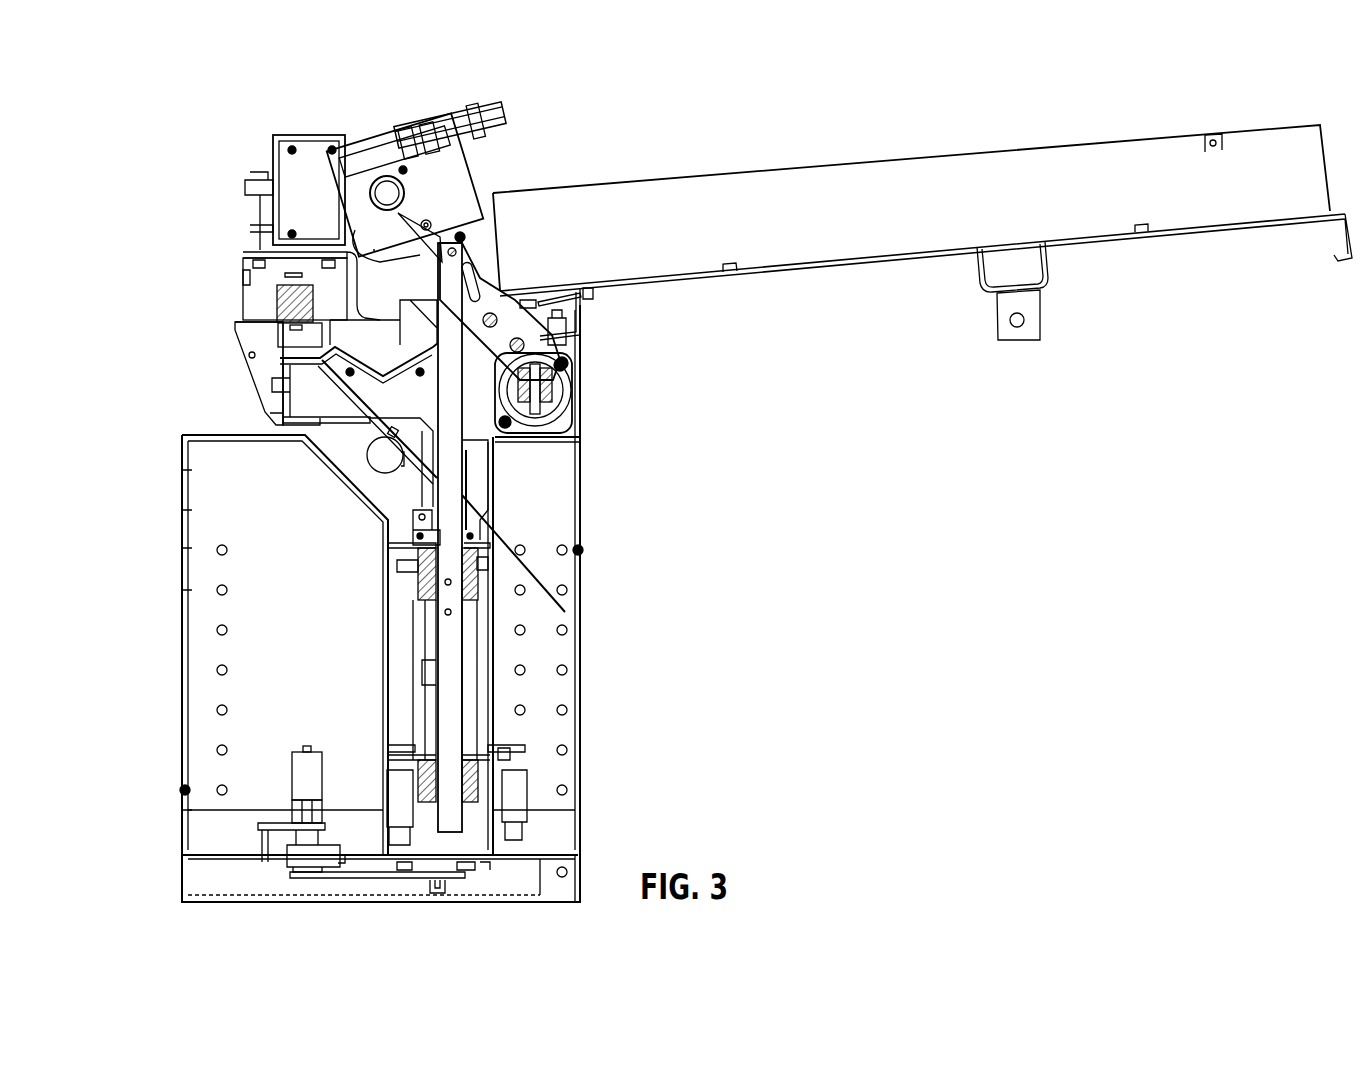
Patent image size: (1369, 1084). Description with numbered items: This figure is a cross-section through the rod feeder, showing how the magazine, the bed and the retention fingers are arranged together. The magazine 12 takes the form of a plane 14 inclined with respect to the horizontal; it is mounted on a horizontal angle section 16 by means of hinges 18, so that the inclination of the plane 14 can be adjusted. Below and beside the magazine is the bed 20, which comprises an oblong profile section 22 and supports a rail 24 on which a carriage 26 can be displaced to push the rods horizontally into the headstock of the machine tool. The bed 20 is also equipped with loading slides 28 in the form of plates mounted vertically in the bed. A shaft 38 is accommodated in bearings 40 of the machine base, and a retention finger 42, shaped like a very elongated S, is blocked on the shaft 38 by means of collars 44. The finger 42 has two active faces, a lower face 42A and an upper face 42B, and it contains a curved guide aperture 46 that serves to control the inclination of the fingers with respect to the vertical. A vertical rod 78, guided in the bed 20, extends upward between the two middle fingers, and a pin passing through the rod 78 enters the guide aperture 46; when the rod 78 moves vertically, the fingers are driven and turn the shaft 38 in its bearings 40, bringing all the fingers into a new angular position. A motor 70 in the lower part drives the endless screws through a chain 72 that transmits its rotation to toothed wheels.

The magazine 12 is at (893, 295).
The plane 14 is at (790, 273).
The horizontal angle section 16 is at (580, 332).
The hinges 18 is at (587, 292).
The bed 20 is at (236, 391).
The oblong profile section 22 is at (277, 340).
The rail 24 is at (292, 302).
The carriage 26 is at (313, 133).
The loading slides 28 is at (483, 467).
The shaft 38 is at (547, 402).
The bearings 40 is at (548, 400).
The retention finger 42 is at (480, 288).
The lower face 42A is at (520, 297).
The upper face 42B is at (442, 222).
The collars 44 is at (552, 382).
The guide aperture 46 is at (470, 270).
The motor 70 is at (297, 772).
The chain 72 is at (376, 880).
The vertical rod 78 is at (450, 491).